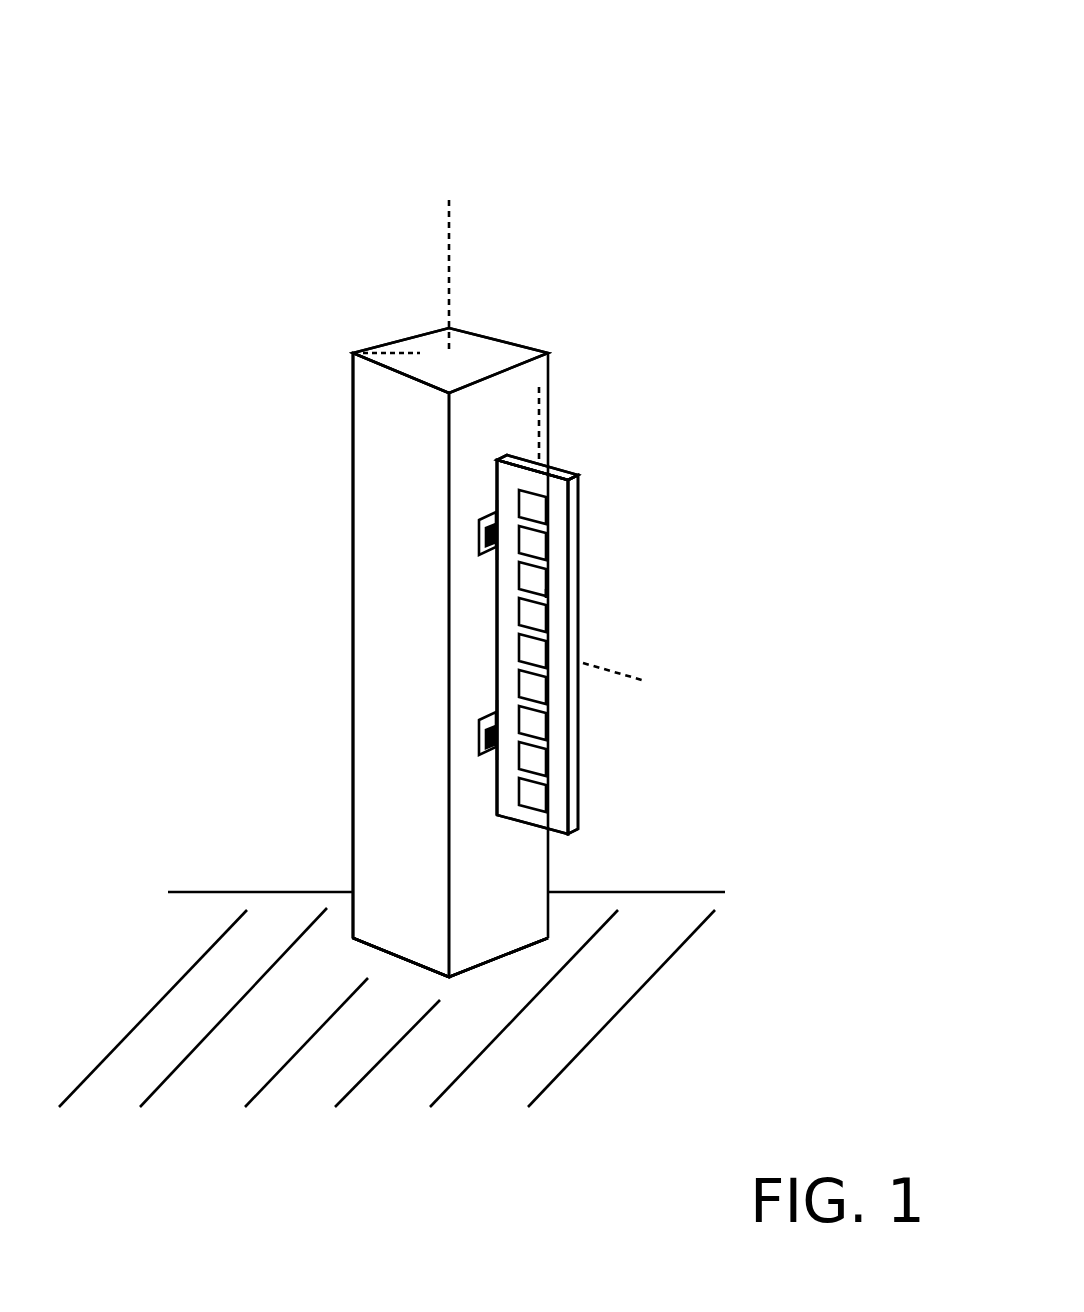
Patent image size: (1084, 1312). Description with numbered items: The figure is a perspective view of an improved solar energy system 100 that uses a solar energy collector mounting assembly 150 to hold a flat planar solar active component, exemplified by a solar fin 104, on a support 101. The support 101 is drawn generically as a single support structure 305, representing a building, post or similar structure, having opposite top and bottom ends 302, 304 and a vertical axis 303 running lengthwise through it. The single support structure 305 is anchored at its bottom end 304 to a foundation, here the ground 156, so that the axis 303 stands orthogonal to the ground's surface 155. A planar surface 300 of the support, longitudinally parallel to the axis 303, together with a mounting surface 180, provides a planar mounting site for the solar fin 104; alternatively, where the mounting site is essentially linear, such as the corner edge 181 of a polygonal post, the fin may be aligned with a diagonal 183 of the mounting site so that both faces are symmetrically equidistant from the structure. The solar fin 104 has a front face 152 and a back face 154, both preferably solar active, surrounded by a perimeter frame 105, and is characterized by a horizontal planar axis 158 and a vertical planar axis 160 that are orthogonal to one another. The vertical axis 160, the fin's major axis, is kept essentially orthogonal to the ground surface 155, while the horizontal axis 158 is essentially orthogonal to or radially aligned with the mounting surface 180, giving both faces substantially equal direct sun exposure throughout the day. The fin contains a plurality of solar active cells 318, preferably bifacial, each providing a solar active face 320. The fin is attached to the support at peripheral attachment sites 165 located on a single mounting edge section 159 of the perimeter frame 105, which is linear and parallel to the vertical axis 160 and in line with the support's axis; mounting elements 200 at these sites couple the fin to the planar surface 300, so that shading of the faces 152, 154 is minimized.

The solar energy system 100 is at (630, 107).
The solar energy collector mounting assembly 150 is at (660, 155).
The support 101 is at (375, 832).
The planar surface 300 is at (450, 923).
The mounting surface 180 is at (421, 933).
The top end 302 is at (431, 345).
The vertical axis 303 is at (452, 232).
The diagonal 183 is at (372, 352).
The corner edge 181 is at (353, 450).
The single support structure 305 is at (355, 653).
The bottom end 304 is at (393, 957).
The vertical planar axis 160 is at (542, 420).
The solar fin 104 is at (580, 487).
The perimeter frame 105 is at (518, 460).
The back face 154 is at (605, 552).
The front face 152 is at (553, 707).
The horizontal planar axis 158 is at (610, 668).
The mounting edge section 159 is at (495, 620).
The peripheral attachment site 165 is at (495, 503).
The mounting element 200 is at (480, 544).
The solar active cell 318 is at (547, 578).
The solar active face 320 is at (562, 589).
The ground surface 155 is at (653, 893).
The ground 156 is at (338, 1093).